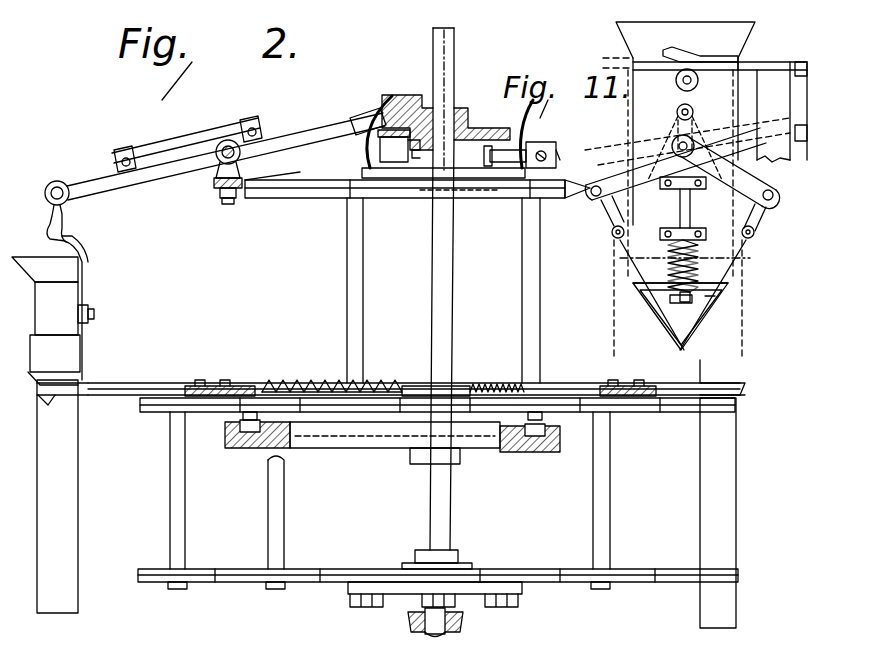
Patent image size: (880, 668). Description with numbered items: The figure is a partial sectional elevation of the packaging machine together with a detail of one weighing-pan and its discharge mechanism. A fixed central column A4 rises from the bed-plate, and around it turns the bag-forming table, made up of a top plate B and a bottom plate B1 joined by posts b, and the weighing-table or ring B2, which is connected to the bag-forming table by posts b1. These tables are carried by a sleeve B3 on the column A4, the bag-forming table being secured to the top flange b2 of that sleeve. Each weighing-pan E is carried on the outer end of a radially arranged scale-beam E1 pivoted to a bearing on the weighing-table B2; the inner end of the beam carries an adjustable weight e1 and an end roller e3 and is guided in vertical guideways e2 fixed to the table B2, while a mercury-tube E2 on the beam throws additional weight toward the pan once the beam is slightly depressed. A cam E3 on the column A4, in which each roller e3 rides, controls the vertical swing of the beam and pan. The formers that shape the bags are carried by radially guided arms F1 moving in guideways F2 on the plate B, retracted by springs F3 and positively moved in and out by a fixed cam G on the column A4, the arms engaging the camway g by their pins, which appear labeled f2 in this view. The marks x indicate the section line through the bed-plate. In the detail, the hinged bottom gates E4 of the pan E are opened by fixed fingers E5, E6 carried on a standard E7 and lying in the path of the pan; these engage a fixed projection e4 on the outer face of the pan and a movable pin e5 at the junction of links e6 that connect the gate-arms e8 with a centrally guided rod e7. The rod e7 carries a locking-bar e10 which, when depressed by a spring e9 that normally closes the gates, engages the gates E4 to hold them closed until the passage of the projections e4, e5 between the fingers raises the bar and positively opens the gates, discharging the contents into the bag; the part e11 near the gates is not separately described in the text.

In FIG. 2, the fixed central column A4 is at (440, 332).
In FIG. 2, the cam E3 is at (406, 95).
In FIG. 2, the end roller e3 is at (392, 100).
In FIG. 2, the vertical guideways e2 is at (372, 148).
In FIG. 2, the weighing-table B2 is at (305, 195).
In FIG. 2, the scale-beam E1 is at (170, 180).
In FIG. 2, the adjustable weight e1 is at (334, 112).
In FIG. 2, the mercury-tube E2 is at (190, 142).
In FIG. 2, the posts b1 is at (352, 325).
In FIG. 2, the former-arms F1 is at (140, 392).
In FIG. 2, the weighing-pan E is at (53, 321).
In FIG. 11, the weighing-pan E is at (682, 174).
In FIG. 2, the section line x is at (738, 388).
In FIG. 2, the springs F3 is at (300, 382).
In FIG. 2, the guideways F2 is at (210, 385).
In FIG. 2, the top plate B is at (640, 412).
In FIG. 2, the fixed cam G is at (346, 447).
In FIG. 2, the camway g is at (392, 444).
In FIG. 2, the bolts f2 is at (242, 424).
In FIG. 2, the posts b is at (178, 521).
In FIG. 2, the bottom plate B1 is at (633, 571).
In FIG. 2, the top flange b2 is at (524, 592).
In FIG. 2, the sleeve B3 is at (463, 622).
In FIG. 11, the standard E7 is at (778, 158).
In FIG. 11, the fixed projection e4 is at (676, 80).
In FIG. 11, the fixed finger E5 is at (710, 70).
In FIG. 11, the movable pin e5 is at (676, 113).
In FIG. 11, the fixed finger E6 is at (725, 135).
In FIG. 11, the links e6 is at (664, 185).
In FIG. 11, the gate-arms e8 is at (755, 230).
In FIG. 11, the centrally-guided rod e7 is at (680, 210).
In FIG. 11, the spring e9 is at (660, 236).
In FIG. 11, the hinged bottom gates E4 is at (726, 286).
In FIG. 11, the locking-bar e10 is at (700, 300).
In FIG. 11, the pin e11 is at (710, 302).